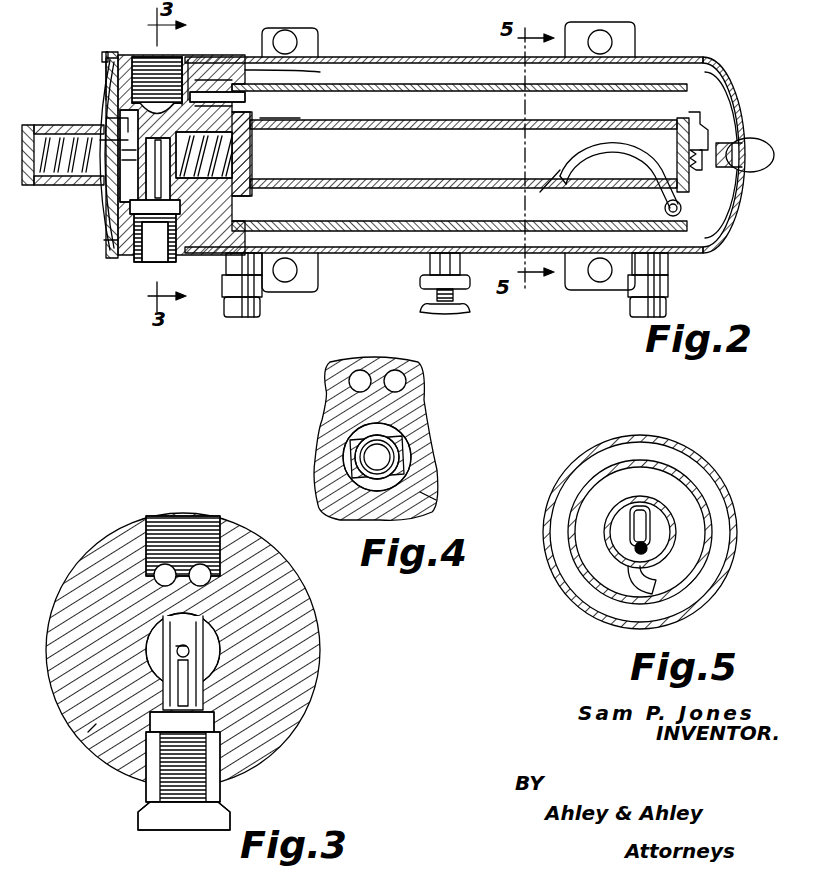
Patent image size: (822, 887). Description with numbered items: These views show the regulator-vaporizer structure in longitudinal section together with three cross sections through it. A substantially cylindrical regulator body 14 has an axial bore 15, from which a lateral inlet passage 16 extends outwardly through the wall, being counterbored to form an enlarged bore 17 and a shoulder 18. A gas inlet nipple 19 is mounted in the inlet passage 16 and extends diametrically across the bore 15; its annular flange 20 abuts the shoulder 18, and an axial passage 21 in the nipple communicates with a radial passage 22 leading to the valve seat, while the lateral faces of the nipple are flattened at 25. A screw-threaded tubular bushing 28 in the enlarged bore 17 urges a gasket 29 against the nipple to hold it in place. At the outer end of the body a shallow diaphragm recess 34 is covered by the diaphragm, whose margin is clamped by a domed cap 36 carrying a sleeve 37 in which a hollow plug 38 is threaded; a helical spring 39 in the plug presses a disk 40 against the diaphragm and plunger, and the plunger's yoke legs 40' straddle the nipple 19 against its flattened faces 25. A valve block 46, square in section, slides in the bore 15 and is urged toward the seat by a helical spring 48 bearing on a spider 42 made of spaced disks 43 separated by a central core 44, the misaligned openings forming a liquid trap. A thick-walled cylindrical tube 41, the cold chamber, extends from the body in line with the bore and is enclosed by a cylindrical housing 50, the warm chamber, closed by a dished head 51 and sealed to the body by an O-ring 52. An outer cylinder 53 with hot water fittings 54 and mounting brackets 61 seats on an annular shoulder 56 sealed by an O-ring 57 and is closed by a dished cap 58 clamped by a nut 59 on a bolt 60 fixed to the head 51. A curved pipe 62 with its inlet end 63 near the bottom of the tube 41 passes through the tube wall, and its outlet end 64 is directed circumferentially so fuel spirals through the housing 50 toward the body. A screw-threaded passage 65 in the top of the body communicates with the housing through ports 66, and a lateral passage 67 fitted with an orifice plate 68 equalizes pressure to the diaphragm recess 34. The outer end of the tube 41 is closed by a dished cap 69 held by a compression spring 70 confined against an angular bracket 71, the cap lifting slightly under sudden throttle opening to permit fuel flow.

In FIG. 2, the regulator body 14 is at (128, 254).
In FIG. 4, the regulator body 14 is at (326, 404).
In FIG. 3, the regulator body 14 is at (276, 562).
In FIG. 2, the axial bore 15 is at (102, 128).
In FIG. 4, the axial bore 15 is at (410, 435).
In FIG. 2, the inlet passage 16 is at (100, 172).
In FIG. 3, the inlet passage 16 is at (228, 684).
In FIG. 2, the enlarged bore 17 is at (112, 228).
In FIG. 2, the shoulder 18 is at (106, 202).
In FIG. 3, the shoulder 18 is at (88, 732).
In FIG. 3, the gas inlet nipple 19 is at (300, 604).
In FIG. 3, the annular flange 20 is at (214, 720).
In FIG. 3, the axial passage 21 is at (180, 672).
In FIG. 3, the radial passage 22 is at (160, 640).
In FIG. 3, the flattened faces 25 is at (276, 646).
In FIG. 2, the tubular bushing 28 is at (166, 290).
In FIG. 3, the tubular bushing 28 is at (138, 822).
In FIG. 2, the gasket 29 is at (232, 200).
In FIG. 3, the gasket 29 is at (222, 768).
In FIG. 2, the diaphragm recess 34 is at (110, 90).
In FIG. 2, the domed cap 36 is at (113, 52).
In FIG. 2, the sleeve 37 is at (62, 124).
In FIG. 2, the hollow plug 38 is at (32, 128).
In FIG. 2, the helical spring 39 is at (58, 186).
In FIG. 2, the disk 40 is at (93, 114).
In FIG. 3, the yoke legs 40' is at (98, 621).
In FIG. 2, the cylindrical tube 41 is at (400, 130).
In FIG. 5, the cylindrical tube 41 is at (672, 526).
In FIG. 2, the spider 42 is at (264, 152).
In FIG. 2, the disks 43 is at (250, 118).
In FIG. 2, the central core 44 is at (318, 117).
In FIG. 4, the valve block 46 is at (446, 501).
In FIG. 4, the helical spring 48 is at (340, 446).
In FIG. 2, the cylindrical housing 50 is at (368, 221).
In FIG. 5, the cylindrical housing 50 is at (690, 482).
In FIG. 2, the dished head 51 is at (712, 96).
In FIG. 2, the O-ring 52 is at (176, 246).
In FIG. 2, the cylinder 53 is at (385, 57).
In FIG. 5, the cylinder 53 is at (650, 440).
In FIG. 2, the hot water fittings 54 is at (258, 310).
In FIG. 2, the annular shoulder 56 is at (204, 58).
In FIG. 2, the O-ring 57 is at (218, 62).
In FIG. 2, the dished cap 58 is at (722, 228).
In FIG. 2, the nut 59 is at (758, 140).
In FIG. 2, the bolt 60 is at (736, 168).
In FIG. 2, the brackets 61 is at (300, 42).
In FIG. 2, the curved pipe 62 is at (585, 146).
In FIG. 5, the curved pipe 62 is at (634, 530).
In FIG. 2, the inlet end 63 is at (544, 193).
In FIG. 5, the inlet end 63 is at (636, 552).
In FIG. 5, the outlet end 64 is at (656, 582).
In FIG. 2, the screw-threaded passage 65 is at (160, 66).
In FIG. 3, the screw-threaded passage 65 is at (160, 524).
In FIG. 2, the ports 66 is at (322, 72).
In FIG. 4, the ports 66 is at (395, 372).
In FIG. 3, the ports 66 is at (204, 566).
In FIG. 2, the lateral passage 67 is at (130, 70).
In FIG. 2, the orifice plate 68 is at (105, 58).
In FIG. 2, the dished cap 69 is at (650, 196).
In FIG. 2, the compression spring 70 is at (692, 165).
In FIG. 2, the angular bracket 71 is at (692, 110).